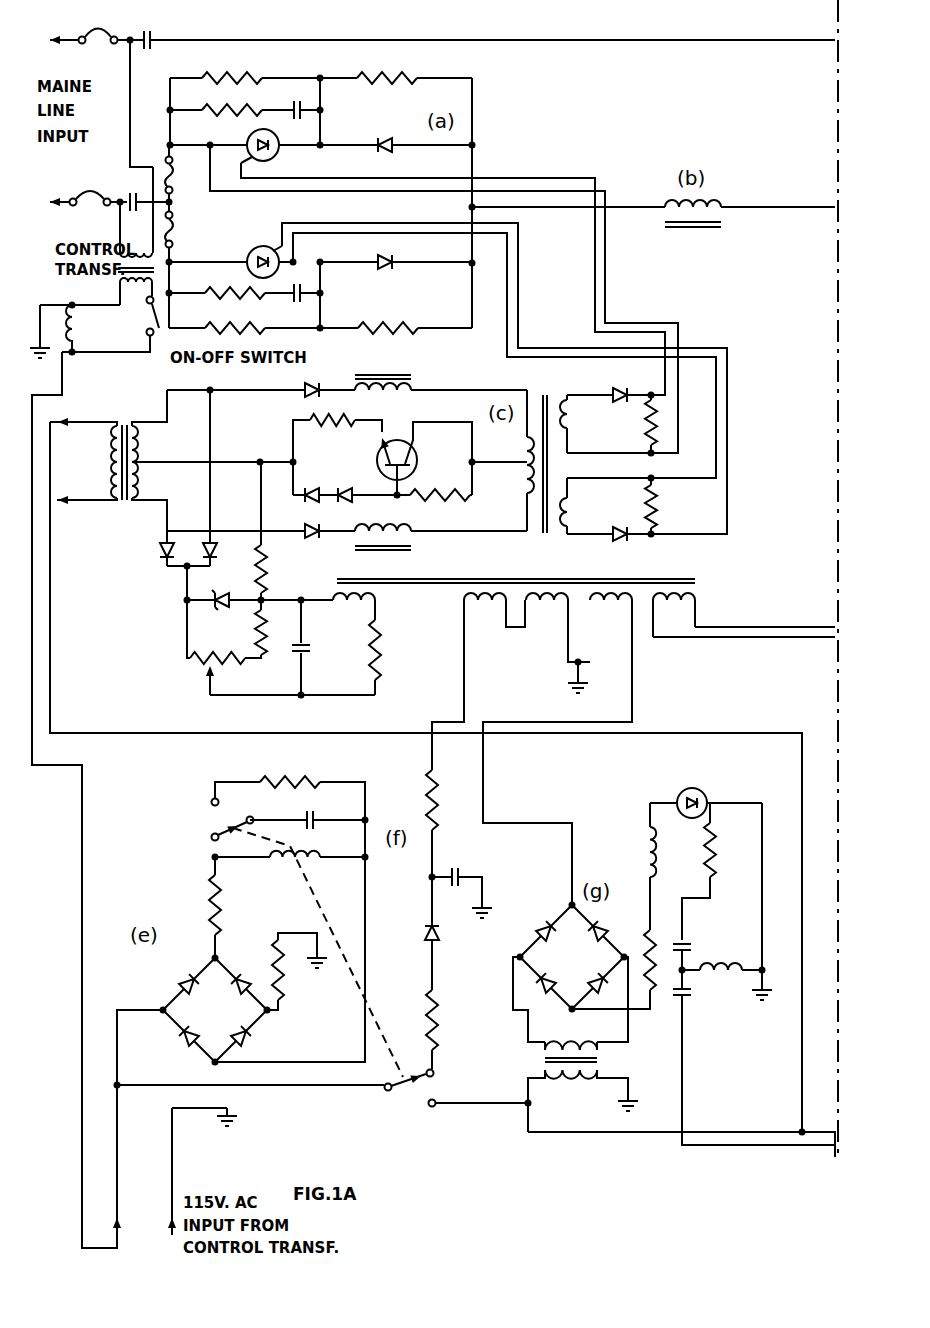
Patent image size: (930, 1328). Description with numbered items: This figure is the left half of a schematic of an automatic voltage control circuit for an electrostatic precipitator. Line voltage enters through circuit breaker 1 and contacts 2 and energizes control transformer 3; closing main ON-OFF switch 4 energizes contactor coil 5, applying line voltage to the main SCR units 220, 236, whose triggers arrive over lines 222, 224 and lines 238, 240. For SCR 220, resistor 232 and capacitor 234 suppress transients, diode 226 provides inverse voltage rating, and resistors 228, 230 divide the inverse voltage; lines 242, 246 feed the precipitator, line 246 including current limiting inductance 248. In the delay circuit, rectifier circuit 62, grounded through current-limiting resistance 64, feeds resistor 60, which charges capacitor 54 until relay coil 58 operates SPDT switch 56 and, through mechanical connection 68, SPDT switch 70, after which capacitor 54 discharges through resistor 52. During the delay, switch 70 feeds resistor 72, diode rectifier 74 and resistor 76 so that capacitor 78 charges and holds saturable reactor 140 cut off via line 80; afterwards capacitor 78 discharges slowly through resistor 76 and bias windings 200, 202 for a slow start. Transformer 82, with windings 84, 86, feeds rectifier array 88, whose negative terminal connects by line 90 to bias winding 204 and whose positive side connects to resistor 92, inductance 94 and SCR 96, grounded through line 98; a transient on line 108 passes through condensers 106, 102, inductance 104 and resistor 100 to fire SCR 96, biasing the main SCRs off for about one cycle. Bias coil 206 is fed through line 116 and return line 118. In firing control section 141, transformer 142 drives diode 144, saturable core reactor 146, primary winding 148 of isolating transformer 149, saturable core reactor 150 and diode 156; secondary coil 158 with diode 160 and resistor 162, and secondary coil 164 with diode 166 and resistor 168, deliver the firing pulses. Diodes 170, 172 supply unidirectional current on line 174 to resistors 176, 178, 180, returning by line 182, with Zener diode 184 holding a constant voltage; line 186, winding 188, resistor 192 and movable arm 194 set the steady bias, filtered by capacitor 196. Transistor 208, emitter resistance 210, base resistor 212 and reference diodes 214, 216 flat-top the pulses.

The circuit breaker 1 is at (95, 32).
The contactor contacts 2 is at (151, 30).
The control transformer 3 is at (118, 252).
The main ON-OFF switch 4 is at (149, 322).
The contactor coil 5 is at (79, 328).
The resistor 52 is at (292, 780).
The capacitor 54 is at (316, 814).
The SPDT switch 56 is at (212, 820).
The relay energizing coil 58 is at (292, 860).
The resistor 60 is at (222, 916).
The rectifier circuit 62 is at (208, 975).
The resistance 64 is at (284, 984).
The mechanical connection 68 is at (380, 1012).
The SPDT switch 70 is at (446, 1091).
The resistor 72 is at (436, 1013).
The diode rectifier 74 is at (438, 936).
The resistor 76 is at (438, 812).
The capacitor 78 is at (456, 868).
The line 80 is at (462, 719).
The transformer 82 is at (612, 1062).
The winding 84 is at (570, 1080).
The winding 86 is at (564, 1044).
The rectifier array 88 is at (556, 912).
The line 90 is at (484, 808).
The resistor 92 is at (646, 942).
The inductance 94 is at (648, 850).
The SCR 96 is at (680, 794).
The line 98 is at (760, 889).
The resistor 100 is at (714, 870).
The condenser 102 is at (685, 944).
The inductance 104 is at (746, 966).
The condenser 106 is at (688, 994).
The line 108 is at (684, 1072).
The line 116 is at (759, 627).
The return line 118 is at (762, 640).
The magnetic amplifier control windings 140 is at (704, 580).
The main SCR firing control section 141 is at (144, 397).
The energizing transformer 142 is at (125, 505).
The diode 144 is at (311, 383).
The saturable core reactor 146 is at (410, 384).
The transformer primary winding 148 is at (526, 470).
The transformer 149 is at (550, 394).
The saturable core reactor device 150 is at (399, 530).
The diode 156 is at (310, 538).
The transformer secondary coil 158 is at (565, 412).
The diode 160 is at (622, 390).
The resistor 162 is at (646, 430).
The secondary coil 164 is at (565, 507).
The diode 166 is at (618, 542).
The resistor 168 is at (654, 522).
The diode 170 is at (160, 550).
The diode 172 is at (216, 550).
The line 174 is at (185, 584).
The resistor 176 is at (216, 661).
The resistor 178 is at (267, 626).
The resistor 180 is at (267, 556).
The line 182 is at (251, 460).
The Zener diode 184 is at (216, 610).
The line 186 is at (300, 598).
The winding 188 is at (352, 606).
The resistor 192 is at (379, 650).
The manually movable arm 194 is at (247, 697).
The capacitor 196 is at (306, 651).
The bias winding 200 is at (502, 588).
The bias winding 202 is at (546, 588).
The bias winding 204 is at (624, 588).
The bias coil 206 is at (662, 588).
The transistor 208 is at (414, 460).
The resistance 210 is at (338, 426).
The resistor 212 is at (436, 502).
The reference diode 214 is at (350, 489).
The reference diode 216 is at (323, 478).
The main SCR unit 220 is at (270, 153).
The line 222 is at (375, 178).
The line 224 is at (375, 191).
The diode 226 is at (386, 153).
The resistor 228 is at (398, 80).
The resistor 230 is at (252, 80).
The resistor 232 is at (253, 112).
The capacitor 234 is at (305, 108).
The main SCR unit 236 is at (261, 248).
The line 238 is at (433, 224).
The line 240 is at (461, 234).
The line 242 is at (613, 39).
The line 246 is at (657, 208).
The current limiting inductance 248 is at (712, 230).